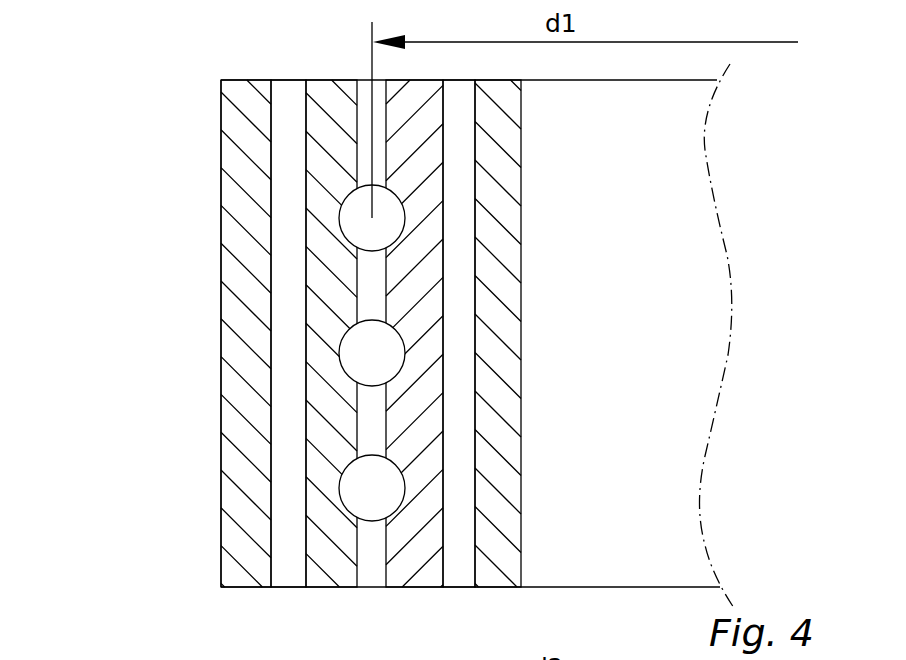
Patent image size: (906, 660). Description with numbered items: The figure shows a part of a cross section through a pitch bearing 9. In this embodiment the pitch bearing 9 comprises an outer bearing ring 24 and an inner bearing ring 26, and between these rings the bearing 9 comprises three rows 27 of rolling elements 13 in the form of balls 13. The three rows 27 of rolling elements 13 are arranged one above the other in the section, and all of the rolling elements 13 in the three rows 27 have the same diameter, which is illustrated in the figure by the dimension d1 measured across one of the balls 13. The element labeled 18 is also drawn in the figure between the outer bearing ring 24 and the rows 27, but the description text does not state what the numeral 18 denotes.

The pitch bearing 9 is at (150, 49).
The outer bearing ring 24 is at (245, 168).
The intermediate gap layer 18 is at (292, 462).
The rows of rolling elements 27 is at (340, 363).
The rolling elements 13 is at (359, 222).
The inner bearing ring 26 is at (622, 336).